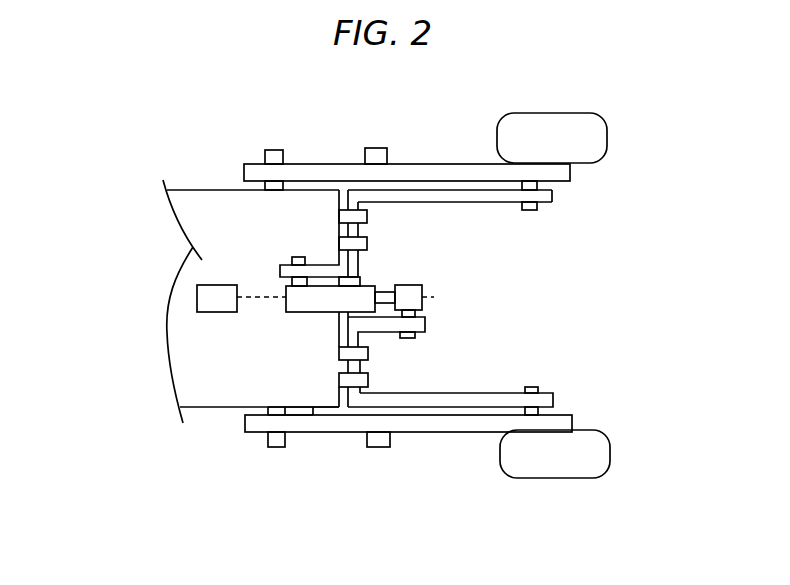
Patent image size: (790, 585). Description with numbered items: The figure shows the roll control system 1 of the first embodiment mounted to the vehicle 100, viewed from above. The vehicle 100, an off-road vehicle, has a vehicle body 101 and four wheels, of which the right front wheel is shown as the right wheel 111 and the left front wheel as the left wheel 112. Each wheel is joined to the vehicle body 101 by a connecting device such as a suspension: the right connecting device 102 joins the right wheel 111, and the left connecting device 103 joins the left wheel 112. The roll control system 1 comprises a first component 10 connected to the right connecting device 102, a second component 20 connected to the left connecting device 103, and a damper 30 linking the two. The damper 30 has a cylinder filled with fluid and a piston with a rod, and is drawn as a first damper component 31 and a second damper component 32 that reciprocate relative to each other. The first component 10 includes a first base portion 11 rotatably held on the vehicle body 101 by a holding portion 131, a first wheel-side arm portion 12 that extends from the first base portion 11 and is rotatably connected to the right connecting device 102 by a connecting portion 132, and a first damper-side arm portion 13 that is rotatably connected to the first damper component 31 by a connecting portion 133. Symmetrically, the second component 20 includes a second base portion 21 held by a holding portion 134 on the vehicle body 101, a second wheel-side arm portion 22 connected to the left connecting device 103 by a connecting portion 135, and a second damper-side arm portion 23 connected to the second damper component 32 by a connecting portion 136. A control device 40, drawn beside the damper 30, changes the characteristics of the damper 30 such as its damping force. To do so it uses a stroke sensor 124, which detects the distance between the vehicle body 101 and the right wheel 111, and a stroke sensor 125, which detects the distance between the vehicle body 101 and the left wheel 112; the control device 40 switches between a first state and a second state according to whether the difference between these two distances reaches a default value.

The roll control system 1 is at (580, 222).
The first component 10 is at (478, 383).
The first base portion 11 is at (342, 365).
The first wheel-side arm portion 12 is at (453, 400).
The first damper-side arm portion 13 is at (423, 325).
The second component 20 is at (490, 213).
The second base portion 21 is at (337, 230).
The second wheel-side arm portion 22 is at (413, 192).
The second damper-side arm portion 23 is at (288, 268).
The damper 30 is at (308, 331).
The first damper component 31 is at (412, 297).
The second damper component 32 is at (297, 305).
The control device 40 is at (213, 298).
The vehicle 100 is at (151, 205).
The vehicle body 101 is at (202, 260).
The right connecting device 102 is at (490, 423).
The left connecting device 103 is at (467, 167).
The right wheel 111 is at (578, 468).
The left wheel 112 is at (550, 127).
The stroke sensor 124 is at (378, 447).
The stroke sensor 125 is at (378, 148).
The holding portion 131 is at (296, 360).
The connecting portion 132 is at (531, 387).
The connecting portion 133 is at (407, 338).
The holding portion 134 is at (337, 240).
The connecting portion 135 is at (532, 210).
The connecting portion 136 is at (297, 258).